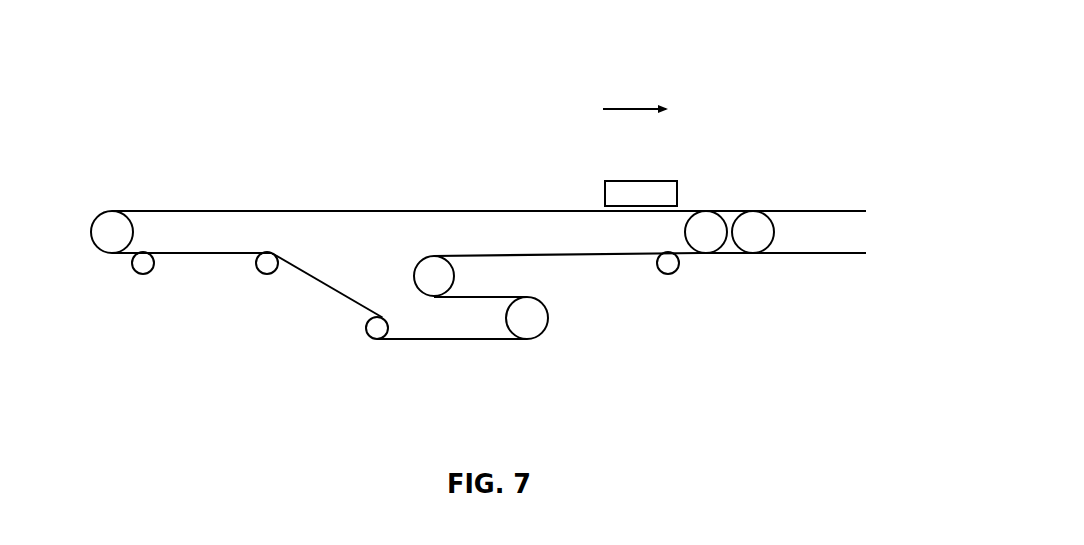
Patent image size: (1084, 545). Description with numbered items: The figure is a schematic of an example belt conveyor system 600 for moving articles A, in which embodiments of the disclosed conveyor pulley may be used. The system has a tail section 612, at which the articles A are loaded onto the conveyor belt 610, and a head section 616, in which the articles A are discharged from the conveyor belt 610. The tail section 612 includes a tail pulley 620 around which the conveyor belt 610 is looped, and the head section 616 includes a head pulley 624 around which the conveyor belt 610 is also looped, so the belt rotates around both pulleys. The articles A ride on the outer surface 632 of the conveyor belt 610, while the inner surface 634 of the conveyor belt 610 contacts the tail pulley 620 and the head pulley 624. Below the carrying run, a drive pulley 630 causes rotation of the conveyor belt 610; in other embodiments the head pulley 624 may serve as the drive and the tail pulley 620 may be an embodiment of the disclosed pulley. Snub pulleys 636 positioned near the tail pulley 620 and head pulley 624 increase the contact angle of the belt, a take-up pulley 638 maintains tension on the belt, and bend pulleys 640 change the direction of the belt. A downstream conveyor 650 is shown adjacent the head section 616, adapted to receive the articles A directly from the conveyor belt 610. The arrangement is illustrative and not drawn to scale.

The belt conveyor system 600 is at (157, 48).
The conveyor belt 610 is at (458, 210).
The tail section 612 is at (108, 270).
The head section 616 is at (649, 284).
The tail pulley 620 is at (101, 215).
The head pulley 624 is at (707, 222).
The drive pulley 630 is at (530, 326).
The outer surface 632 is at (205, 210).
The inner surface 634 is at (478, 300).
The snub pulleys 636 is at (144, 275).
The take-up pulley 638 is at (426, 278).
The bend pulleys 640 is at (270, 275).
The downstream conveyor 650 is at (795, 178).
The articles A is at (623, 191).